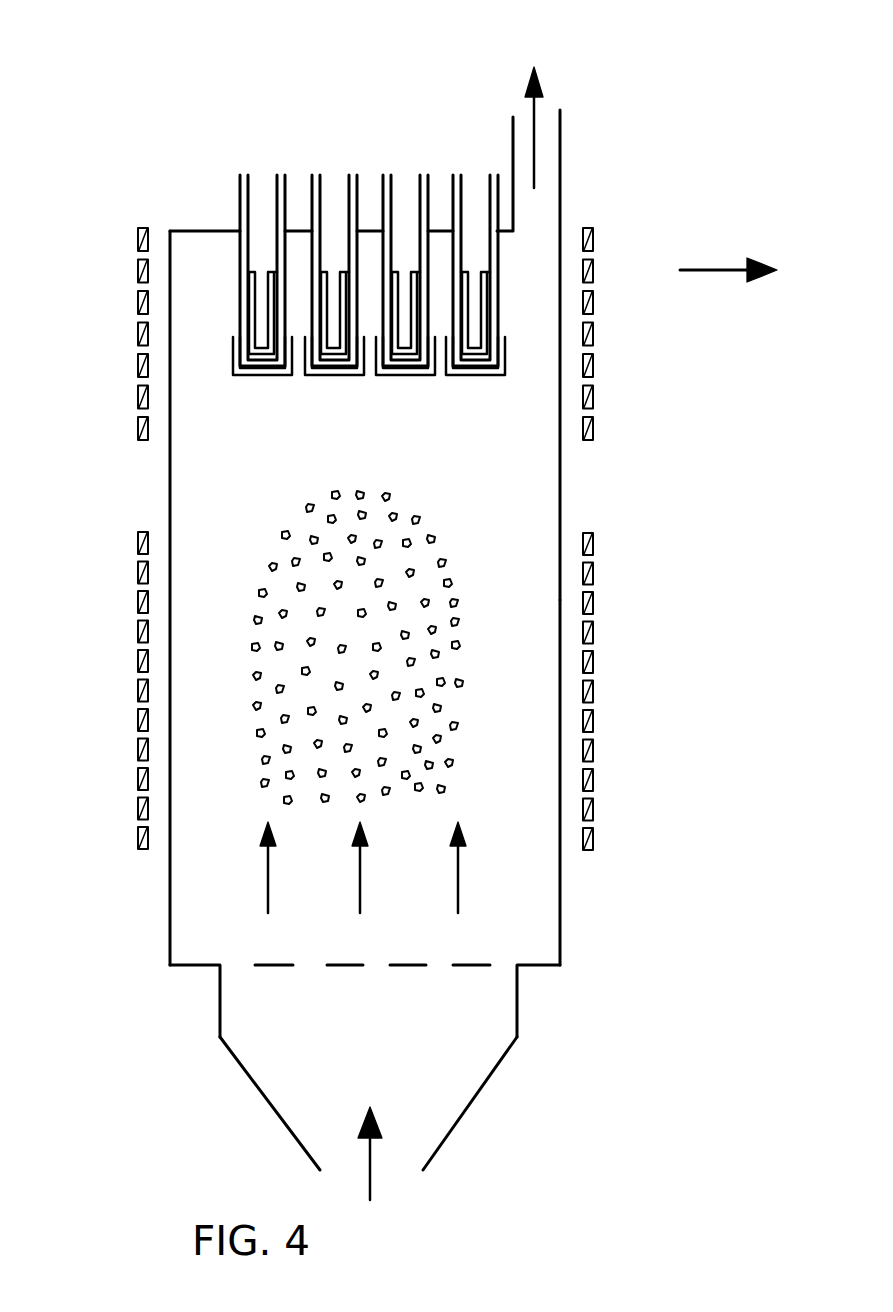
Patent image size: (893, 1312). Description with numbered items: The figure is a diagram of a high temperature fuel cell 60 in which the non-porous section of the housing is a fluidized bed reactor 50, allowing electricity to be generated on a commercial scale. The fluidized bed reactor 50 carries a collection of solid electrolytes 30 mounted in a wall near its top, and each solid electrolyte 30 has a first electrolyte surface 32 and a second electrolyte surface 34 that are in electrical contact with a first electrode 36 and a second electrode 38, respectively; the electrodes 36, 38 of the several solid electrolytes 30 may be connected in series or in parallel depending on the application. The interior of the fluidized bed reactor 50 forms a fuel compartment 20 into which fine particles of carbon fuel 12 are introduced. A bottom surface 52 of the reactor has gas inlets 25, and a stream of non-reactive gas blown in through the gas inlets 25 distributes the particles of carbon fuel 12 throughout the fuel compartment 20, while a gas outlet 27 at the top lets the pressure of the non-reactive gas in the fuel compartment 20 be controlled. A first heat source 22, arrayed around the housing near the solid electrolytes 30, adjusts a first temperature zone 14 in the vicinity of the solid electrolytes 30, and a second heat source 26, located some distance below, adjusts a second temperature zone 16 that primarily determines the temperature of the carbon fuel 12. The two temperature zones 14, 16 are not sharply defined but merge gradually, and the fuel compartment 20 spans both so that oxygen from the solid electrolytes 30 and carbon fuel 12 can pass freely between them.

The fuel cell 60 is at (115, 108).
The carbon fuel 12 is at (468, 576).
The first temperature zone 14 is at (528, 407).
The second temperature zone 16 is at (213, 775).
The fuel compartment 20 is at (529, 912).
The first heat source 22 is at (128, 333).
The gas inlets 25 is at (308, 965).
The second heat source 26 is at (128, 626).
The gas outlet 27 is at (547, 117).
The solid electrolytes 30 is at (357, 185).
The first electrolyte surface 32 is at (240, 258).
The second electrolyte surface 34 is at (347, 275).
The first electrode 36 is at (333, 377).
The second electrode 38 is at (260, 272).
The fluidized bed reactor 50 is at (170, 490).
The bottom surface 52 is at (200, 970).